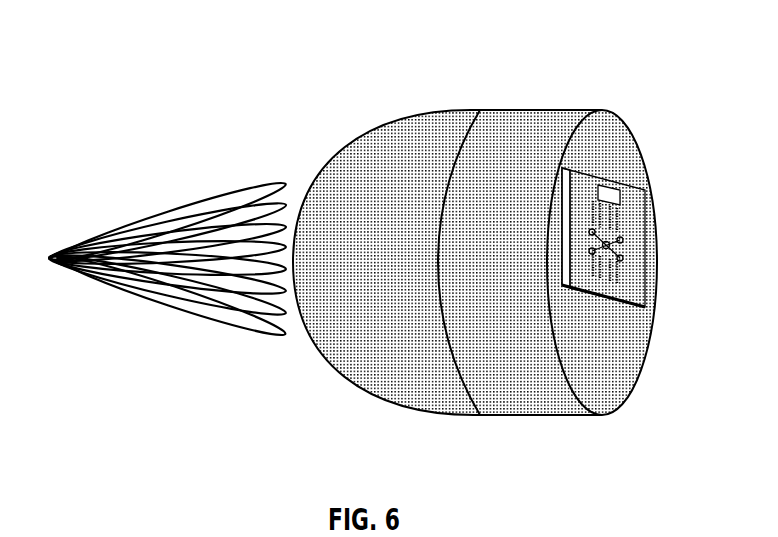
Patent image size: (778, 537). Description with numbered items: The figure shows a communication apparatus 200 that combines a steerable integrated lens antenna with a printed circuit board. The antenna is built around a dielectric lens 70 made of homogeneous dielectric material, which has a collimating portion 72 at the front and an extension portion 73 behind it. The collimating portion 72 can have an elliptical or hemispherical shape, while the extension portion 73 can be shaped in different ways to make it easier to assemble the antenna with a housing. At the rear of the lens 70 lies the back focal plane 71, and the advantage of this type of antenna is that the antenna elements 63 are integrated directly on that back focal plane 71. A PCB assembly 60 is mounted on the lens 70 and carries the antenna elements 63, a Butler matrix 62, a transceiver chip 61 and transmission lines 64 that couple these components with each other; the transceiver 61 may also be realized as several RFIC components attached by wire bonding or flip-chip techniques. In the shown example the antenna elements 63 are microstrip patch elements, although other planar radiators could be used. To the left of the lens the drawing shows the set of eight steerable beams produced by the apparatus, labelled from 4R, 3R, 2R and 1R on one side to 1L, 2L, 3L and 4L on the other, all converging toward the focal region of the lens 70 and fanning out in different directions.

The communication apparatus 200 is at (397, 30).
The dielectric lens 70 is at (503, 264).
The back focal plane 71 is at (630, 279).
The collimating portion 72 is at (385, 262).
The extension portion 73 is at (520, 262).
The PCB assembly 60 is at (614, 185).
The transceiver chip 61 is at (637, 238).
The Butler matrix 62 is at (621, 240).
The antenna elements 63 is at (614, 283).
The transmission lines 64 is at (616, 268).
The beam 4R is at (169, 211).
The beam 3R is at (160, 223).
The beam 2R is at (156, 238).
The beam 1R is at (149, 252).
The beam 1L is at (149, 264).
The beam 2L is at (156, 277).
The beam 3L is at (160, 289).
The beam 4L is at (170, 308).